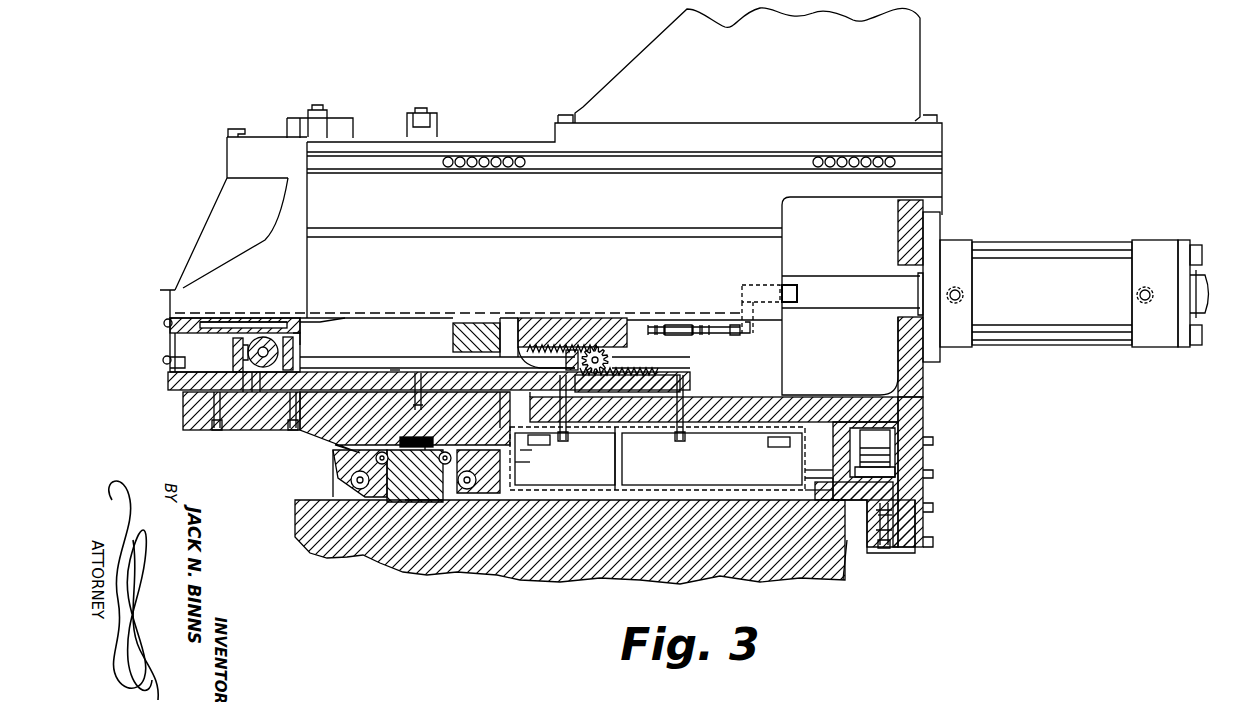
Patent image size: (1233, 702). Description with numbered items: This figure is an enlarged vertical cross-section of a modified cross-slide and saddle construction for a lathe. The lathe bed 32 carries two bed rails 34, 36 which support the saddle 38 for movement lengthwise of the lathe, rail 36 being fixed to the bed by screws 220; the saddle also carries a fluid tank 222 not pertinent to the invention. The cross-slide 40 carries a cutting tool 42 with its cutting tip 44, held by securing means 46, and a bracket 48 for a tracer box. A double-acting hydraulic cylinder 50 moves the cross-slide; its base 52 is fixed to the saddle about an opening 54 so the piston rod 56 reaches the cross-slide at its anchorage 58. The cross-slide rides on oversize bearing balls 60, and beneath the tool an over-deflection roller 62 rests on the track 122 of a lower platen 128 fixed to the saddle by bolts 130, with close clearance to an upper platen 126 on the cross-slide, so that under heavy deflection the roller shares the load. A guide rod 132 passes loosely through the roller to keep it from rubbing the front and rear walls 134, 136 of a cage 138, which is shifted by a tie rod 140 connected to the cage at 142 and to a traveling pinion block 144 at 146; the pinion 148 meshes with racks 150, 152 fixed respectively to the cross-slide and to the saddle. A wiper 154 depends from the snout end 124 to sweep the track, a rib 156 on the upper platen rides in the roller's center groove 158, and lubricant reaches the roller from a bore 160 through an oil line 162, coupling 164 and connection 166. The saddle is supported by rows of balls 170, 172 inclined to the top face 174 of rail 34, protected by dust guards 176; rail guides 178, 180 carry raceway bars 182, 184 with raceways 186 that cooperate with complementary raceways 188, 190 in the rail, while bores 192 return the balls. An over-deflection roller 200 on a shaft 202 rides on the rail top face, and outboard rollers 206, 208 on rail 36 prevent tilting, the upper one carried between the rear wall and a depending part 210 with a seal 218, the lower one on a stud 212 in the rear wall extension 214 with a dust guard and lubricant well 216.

The lathe bed 32 is at (580, 583).
The bed rail 34 is at (385, 520).
The bed rail 36 is at (925, 490).
The saddle 38 is at (925, 403).
The cross-slide 40 is at (935, 183).
The cutting tool 42 is at (258, 142).
The cutting tip 44 is at (232, 133).
The securing means 46 is at (318, 110).
The bracket for a tracer box 48 is at (920, 38).
The double-acting hydraulic cylinder 50 is at (1048, 265).
The base of the cylinder 52 is at (940, 363).
The opening 54 is at (900, 270).
The piston rod 56 is at (828, 292).
The anchorage of piston rod 58 is at (787, 283).
The bearing balls 60 is at (493, 160).
The over-deflection roller 62 is at (243, 358).
The track 122 is at (163, 362).
The snout end of the cross-slide 124 is at (170, 298).
The upper platen 126 is at (165, 325).
The platen 128 is at (170, 383).
The bolts or screws 130 is at (213, 410).
The guide rod 132 is at (295, 349).
The front wall of cage 134 is at (232, 350).
The rear wall of cage 136 is at (293, 340).
The cage 138 is at (250, 387).
The tie rod 140 is at (377, 362).
The tie rod connection to cage 142 is at (265, 374).
The traveling pinion block 144 is at (608, 359).
The tie rod connection to pinion block 146 is at (513, 320).
The pinion 148 is at (598, 343).
The toothed rack 150 is at (555, 343).
The toothed rack 152 is at (637, 458).
The wiper or shield 154 is at (172, 345).
The depending elongate rib 156 is at (200, 320).
The circumferential center groove 158 is at (257, 374).
The bore 160 is at (263, 334).
The oil line 162 is at (320, 323).
The coupling 164 is at (672, 327).
The connection 166 is at (745, 287).
The ball bearing device 170 is at (351, 480).
The ball bearing device 172 is at (513, 478).
The top face of bed rail 174 is at (447, 448).
The dust guards 176 is at (455, 495).
The rail guide 178 is at (335, 495).
The rail guide 180 is at (488, 494).
The raceway bar 182 is at (355, 457).
The raceway bar 184 is at (535, 456).
The raceways 186 is at (520, 462).
The complementary raceway 188 is at (428, 505).
The complementary raceway 190 is at (432, 500).
The bore 192 is at (337, 487).
The over-deflection roller 200 is at (407, 370).
The shaft 202 is at (393, 370).
The roller 206 is at (875, 440).
The roller 208 is at (893, 452).
The depending part of the saddle 210 is at (810, 470).
The stud 212 is at (895, 522).
The saddle rear wall extension 214 is at (930, 545).
The dust guard and lubricant well 216 is at (885, 555).
The seal 218 is at (808, 478).
The screws 220 is at (848, 548).
The fluid tank or reservoir 222 is at (822, 530).